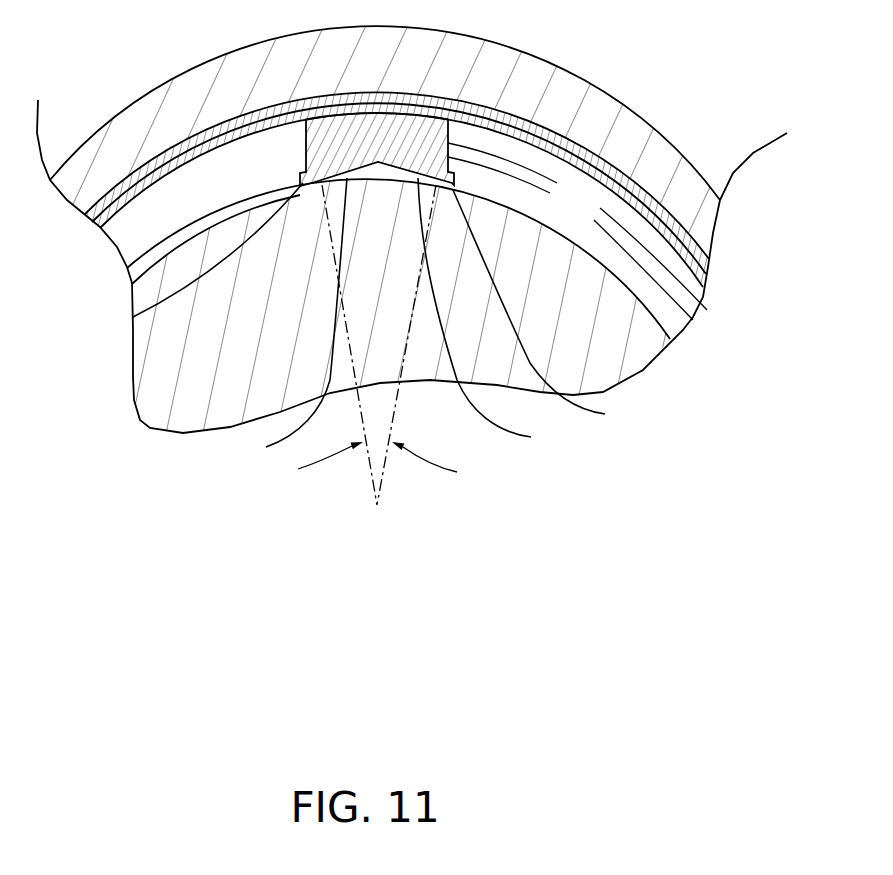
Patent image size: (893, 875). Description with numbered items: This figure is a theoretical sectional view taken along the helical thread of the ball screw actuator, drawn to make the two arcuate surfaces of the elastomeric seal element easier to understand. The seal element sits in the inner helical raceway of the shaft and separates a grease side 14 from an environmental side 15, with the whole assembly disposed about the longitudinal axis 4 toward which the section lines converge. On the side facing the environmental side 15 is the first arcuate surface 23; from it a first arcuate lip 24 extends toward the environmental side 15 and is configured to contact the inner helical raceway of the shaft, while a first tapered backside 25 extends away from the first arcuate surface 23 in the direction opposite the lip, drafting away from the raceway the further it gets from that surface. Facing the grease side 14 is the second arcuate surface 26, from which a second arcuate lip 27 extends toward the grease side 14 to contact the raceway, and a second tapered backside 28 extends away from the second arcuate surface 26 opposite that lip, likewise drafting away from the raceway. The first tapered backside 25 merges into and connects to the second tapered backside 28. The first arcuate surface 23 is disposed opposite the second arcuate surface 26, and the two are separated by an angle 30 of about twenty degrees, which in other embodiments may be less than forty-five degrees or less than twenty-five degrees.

The grease side 14 is at (560, 213).
The environmental side 15 is at (222, 197).
The first arcuate surface 23 is at (303, 132).
The second arcuate surface 26 is at (472, 130).
The first arcuate lip 24 is at (133, 318).
The first tapered backside 25 is at (291, 319).
The second tapered backside 28 is at (489, 314).
The second arcuate lip 27 is at (543, 308).
The angle 30 is at (360, 464).
The longitudinal axis 4 is at (377, 505).